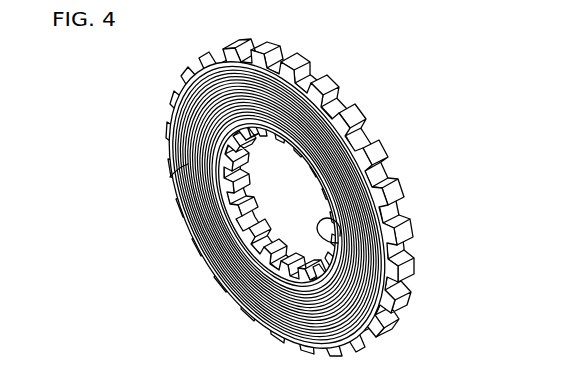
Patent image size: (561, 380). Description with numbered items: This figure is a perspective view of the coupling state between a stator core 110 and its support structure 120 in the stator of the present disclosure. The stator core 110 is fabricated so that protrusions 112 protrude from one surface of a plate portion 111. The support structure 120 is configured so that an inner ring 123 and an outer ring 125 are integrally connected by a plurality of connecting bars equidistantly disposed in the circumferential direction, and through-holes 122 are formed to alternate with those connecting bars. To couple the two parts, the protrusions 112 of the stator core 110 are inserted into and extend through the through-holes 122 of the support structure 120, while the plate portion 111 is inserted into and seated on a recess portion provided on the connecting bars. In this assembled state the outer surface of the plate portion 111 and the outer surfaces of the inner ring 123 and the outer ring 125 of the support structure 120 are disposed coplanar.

The stator core 110 is at (370, 108).
The plate portion 111 is at (357, 203).
The protrusions 112 is at (372, 157).
The support structure 120 is at (166, 120).
The through-holes 122 is at (338, 243).
The inner ring 123 is at (258, 254).
The outer ring 125 is at (170, 177).